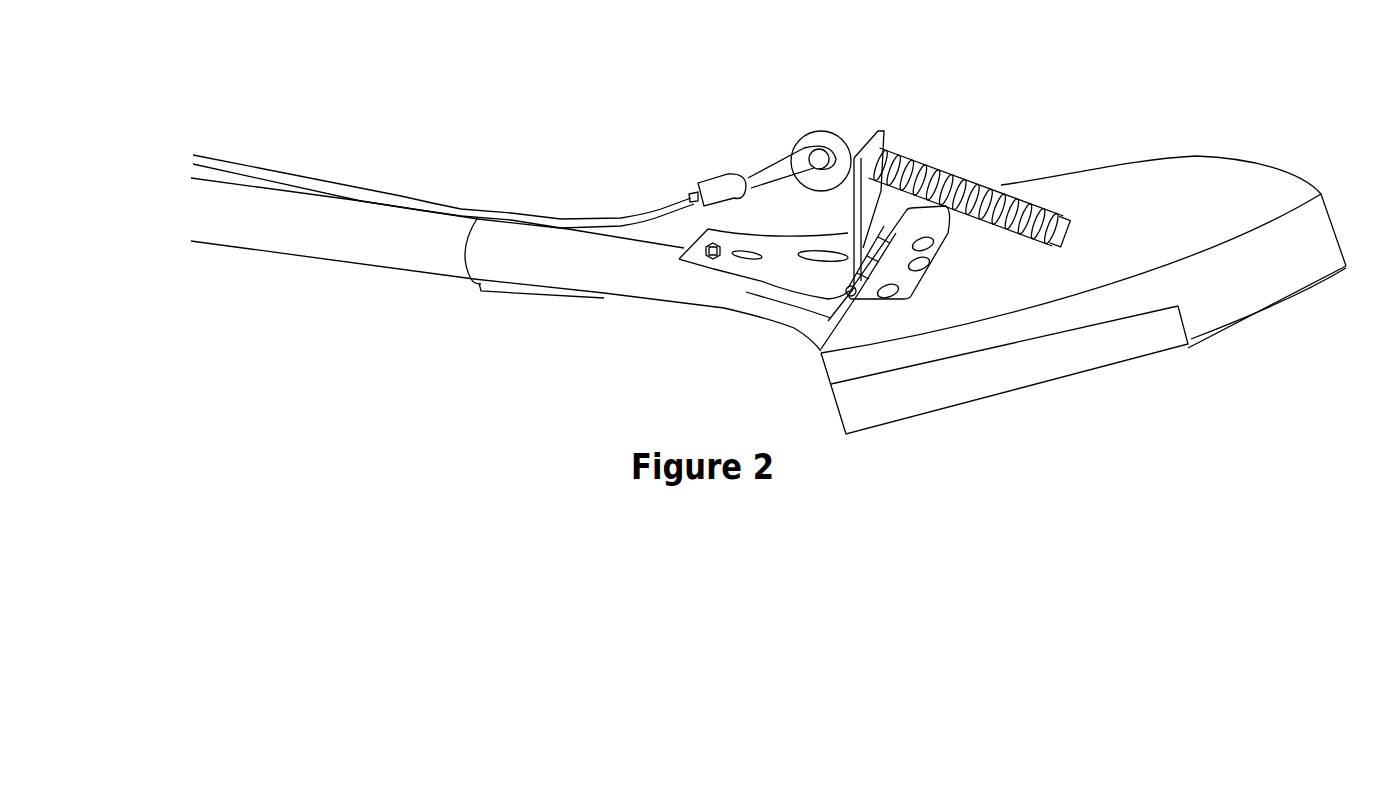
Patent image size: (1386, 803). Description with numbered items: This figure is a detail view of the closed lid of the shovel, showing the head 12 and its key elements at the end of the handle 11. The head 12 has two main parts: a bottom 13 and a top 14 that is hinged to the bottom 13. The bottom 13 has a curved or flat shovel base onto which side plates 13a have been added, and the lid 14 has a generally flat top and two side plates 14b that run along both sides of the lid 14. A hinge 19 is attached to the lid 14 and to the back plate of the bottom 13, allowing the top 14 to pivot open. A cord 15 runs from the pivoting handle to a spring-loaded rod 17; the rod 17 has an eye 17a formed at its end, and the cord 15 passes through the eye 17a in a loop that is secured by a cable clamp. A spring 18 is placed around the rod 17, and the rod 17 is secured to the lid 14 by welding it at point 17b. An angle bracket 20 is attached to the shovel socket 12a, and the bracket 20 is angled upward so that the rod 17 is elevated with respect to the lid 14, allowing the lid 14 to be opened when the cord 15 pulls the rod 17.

The handle 11 is at (357, 268).
The head 12 is at (1193, 156).
The shovel socket 12a is at (583, 270).
The bottom 13 is at (1193, 363).
The side plates 13a is at (985, 398).
The top 14 is at (1252, 178).
The side plates 14b is at (1240, 292).
The cord 15 is at (653, 218).
The rod 17 is at (930, 153).
The eye 17a is at (815, 128).
The weld point 17b is at (1063, 228).
The spring 18 is at (1002, 178).
The hinge 19 is at (912, 283).
The angle bracket 20 is at (768, 262).